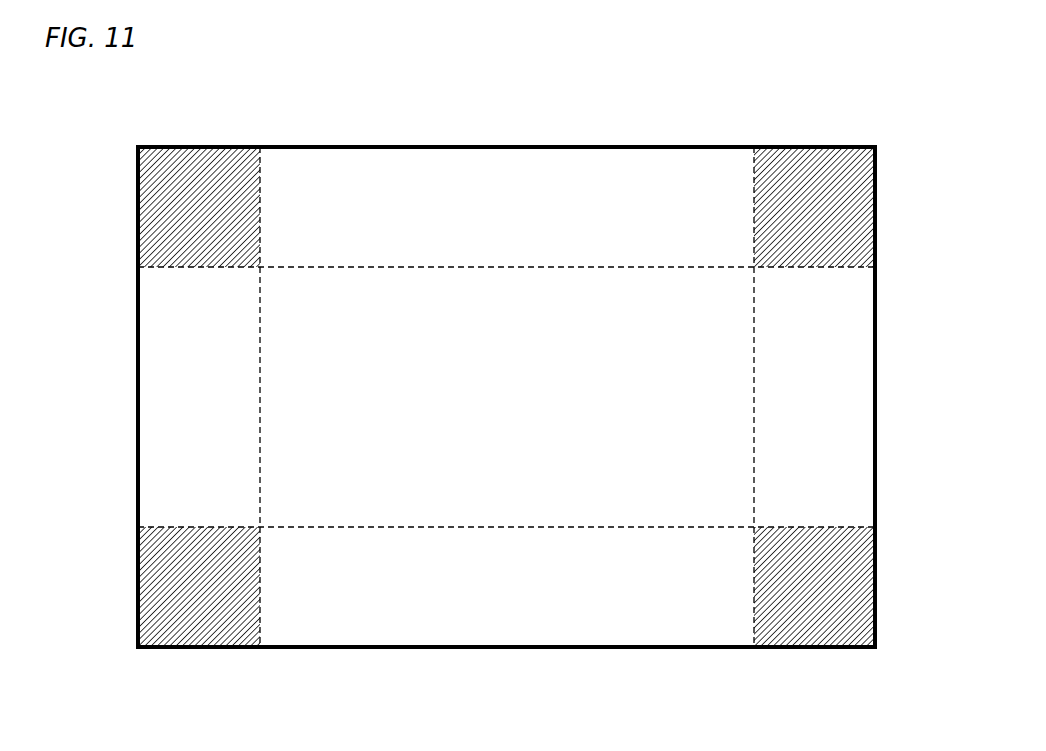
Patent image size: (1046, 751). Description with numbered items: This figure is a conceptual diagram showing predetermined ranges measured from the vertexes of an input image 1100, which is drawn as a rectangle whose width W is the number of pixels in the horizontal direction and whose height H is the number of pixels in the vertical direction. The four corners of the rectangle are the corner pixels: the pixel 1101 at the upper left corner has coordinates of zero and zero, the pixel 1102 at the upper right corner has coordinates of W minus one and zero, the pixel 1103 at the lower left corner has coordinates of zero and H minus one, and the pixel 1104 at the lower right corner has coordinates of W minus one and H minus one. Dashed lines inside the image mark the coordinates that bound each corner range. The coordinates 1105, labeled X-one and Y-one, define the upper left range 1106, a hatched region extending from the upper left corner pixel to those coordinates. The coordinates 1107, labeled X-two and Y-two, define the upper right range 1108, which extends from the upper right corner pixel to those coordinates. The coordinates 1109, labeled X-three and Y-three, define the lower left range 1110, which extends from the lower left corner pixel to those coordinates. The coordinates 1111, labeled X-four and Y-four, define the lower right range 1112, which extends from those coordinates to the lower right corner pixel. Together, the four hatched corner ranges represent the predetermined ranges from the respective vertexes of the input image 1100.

The input image 1100 is at (360, 148).
The pixel at the upper left corner 1101 is at (138, 146).
The pixel at the upper right corner 1102 is at (875, 147).
The pixel at the lower left corner 1103 is at (138, 647).
The pixel at the lower right corner 1104 is at (875, 647).
The coordinates (X1, Y1) 1105 is at (260, 267).
The upper left range 1106 is at (198, 168).
The coordinates (X2, Y2) 1107 is at (754, 267).
The upper right range 1108 is at (797, 172).
The coordinates (X3, Y3) 1109 is at (260, 527).
The lower left range 1110 is at (178, 575).
The coordinates (X4, Y4) 1111 is at (755, 527).
The lower right range 1112 is at (770, 615).